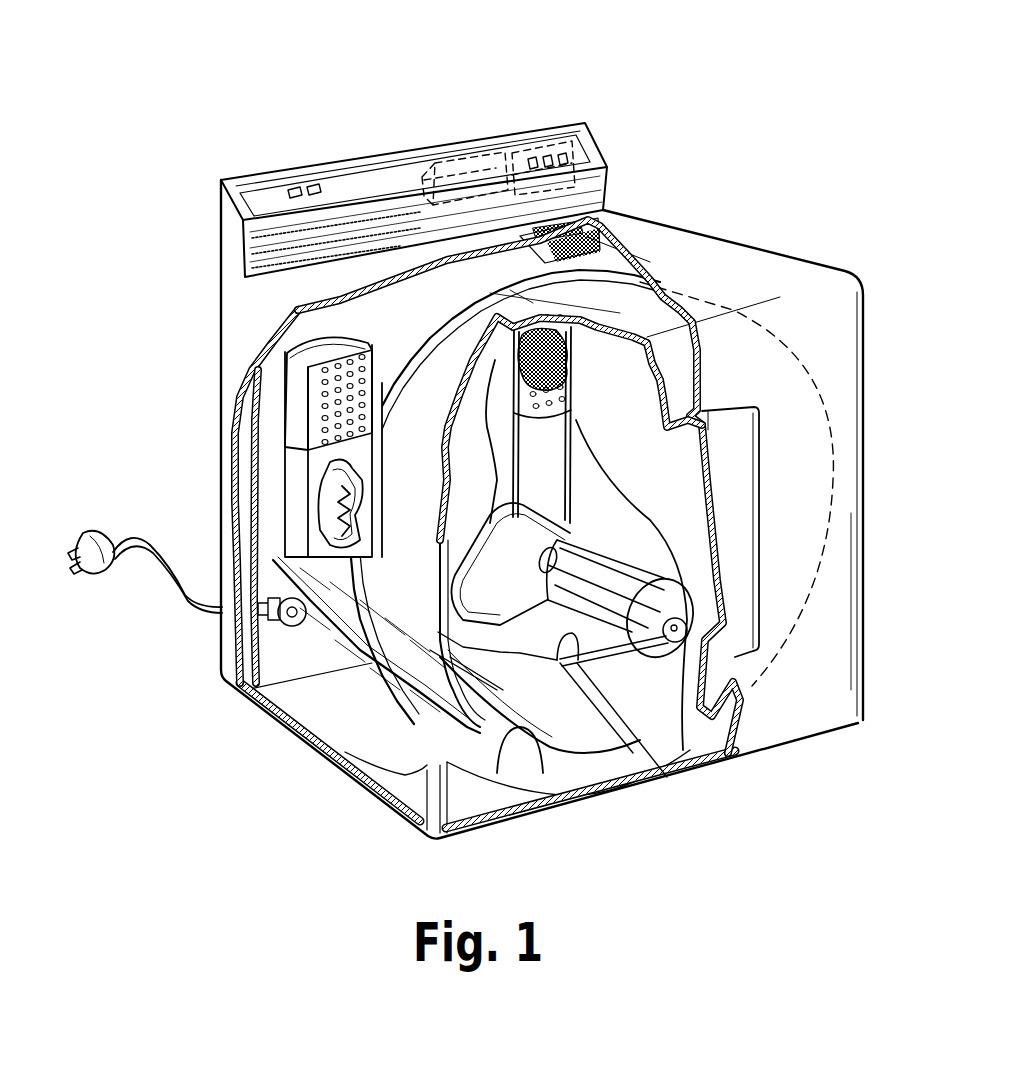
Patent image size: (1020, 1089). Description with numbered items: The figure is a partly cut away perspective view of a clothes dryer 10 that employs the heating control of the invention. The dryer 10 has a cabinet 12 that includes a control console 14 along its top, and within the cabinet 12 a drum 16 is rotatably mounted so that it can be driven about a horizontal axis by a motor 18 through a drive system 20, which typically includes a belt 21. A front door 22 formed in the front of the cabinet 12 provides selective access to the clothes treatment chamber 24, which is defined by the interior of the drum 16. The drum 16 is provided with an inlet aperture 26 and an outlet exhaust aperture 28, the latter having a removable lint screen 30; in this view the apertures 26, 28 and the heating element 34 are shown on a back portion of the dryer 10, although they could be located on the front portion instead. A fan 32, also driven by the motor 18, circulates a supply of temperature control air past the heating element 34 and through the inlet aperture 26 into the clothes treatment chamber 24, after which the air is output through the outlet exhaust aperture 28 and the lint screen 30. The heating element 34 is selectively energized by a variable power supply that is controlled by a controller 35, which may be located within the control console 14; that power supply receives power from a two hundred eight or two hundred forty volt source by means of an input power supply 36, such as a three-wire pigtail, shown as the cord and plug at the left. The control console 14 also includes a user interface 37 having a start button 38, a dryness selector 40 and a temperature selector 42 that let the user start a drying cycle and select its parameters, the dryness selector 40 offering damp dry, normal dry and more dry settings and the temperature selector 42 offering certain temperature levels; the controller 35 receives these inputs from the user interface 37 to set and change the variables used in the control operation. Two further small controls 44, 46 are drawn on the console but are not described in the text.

The clothes dryer 10 is at (840, 235).
The cabinet 12 is at (870, 610).
The control console 14 is at (612, 143).
The drum 16 is at (417, 690).
The motor 18 is at (608, 648).
The drive system 20 is at (688, 758).
The belt 21 is at (588, 640).
The front door 22 is at (747, 530).
The clothes treatment chamber 24 is at (543, 772).
The inlet aperture 26 is at (328, 410).
The outlet exhaust aperture 28 is at (568, 345).
The lint screen 30 is at (585, 334).
The fan 32 is at (565, 527).
The heating element 34 is at (337, 503).
The controller 35 is at (453, 165).
The input power supply 36 is at (83, 533).
The user interface 37 is at (505, 170).
The start button 38 is at (530, 157).
The dryness selector 40 is at (546, 156).
The temperature selector 42 is at (562, 154).
The button 44 is at (293, 188).
The button 46 is at (311, 185).